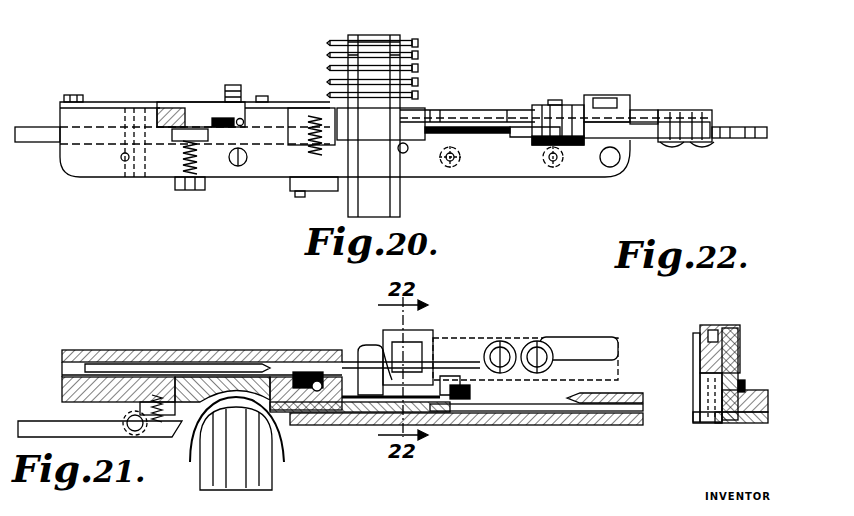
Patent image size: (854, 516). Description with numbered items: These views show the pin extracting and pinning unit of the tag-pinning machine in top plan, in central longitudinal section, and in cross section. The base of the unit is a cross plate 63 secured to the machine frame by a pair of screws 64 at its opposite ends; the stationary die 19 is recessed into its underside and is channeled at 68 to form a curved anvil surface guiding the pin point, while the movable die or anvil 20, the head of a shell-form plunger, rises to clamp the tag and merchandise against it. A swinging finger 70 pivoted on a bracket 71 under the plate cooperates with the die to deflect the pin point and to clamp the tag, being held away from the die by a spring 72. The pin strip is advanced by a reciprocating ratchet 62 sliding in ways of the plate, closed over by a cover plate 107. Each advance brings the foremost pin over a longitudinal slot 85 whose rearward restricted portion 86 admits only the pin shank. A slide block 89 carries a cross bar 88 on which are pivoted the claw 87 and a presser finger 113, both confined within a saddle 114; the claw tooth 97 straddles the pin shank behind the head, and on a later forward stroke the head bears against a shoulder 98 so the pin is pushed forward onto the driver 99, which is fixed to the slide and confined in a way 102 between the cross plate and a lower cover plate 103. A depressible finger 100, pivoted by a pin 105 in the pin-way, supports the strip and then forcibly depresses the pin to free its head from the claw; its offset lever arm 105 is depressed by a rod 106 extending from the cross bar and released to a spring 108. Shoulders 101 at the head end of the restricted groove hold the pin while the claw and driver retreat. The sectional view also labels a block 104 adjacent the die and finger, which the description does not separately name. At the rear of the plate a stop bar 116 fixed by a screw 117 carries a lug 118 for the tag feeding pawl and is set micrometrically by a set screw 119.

In FIG. 21, the stationary die or clamp block 19 is at (272, 380).
In FIG. 21, the movable die or anvil 20 is at (237, 443).
In FIG. 20, the reciprocating ratchet 62 is at (370, 140).
In FIG. 21, the reciprocating ratchet 62 is at (364, 355).
In FIG. 21, the cross plate 63 is at (62, 387).
In FIG. 22, the cross plate 63 is at (758, 392).
In FIG. 20, the screws 64 is at (242, 166).
In FIG. 21, the groove or channel 68 is at (203, 385).
In FIG. 20, the swinging finger 70 is at (58, 143).
In FIG. 21, the swinging finger 70 is at (200, 415).
In FIG. 21, the bracket 71 is at (123, 410).
In FIG. 21, the spring 72 is at (150, 395).
In FIG. 21, the longitudinal slot 85 is at (446, 380).
In FIG. 20, the restricted slot portion 86 is at (462, 138).
In FIG. 21, the restricted slot portion 86 is at (567, 398).
In FIG. 20, the claw 87 is at (675, 145).
In FIG. 21, the claw 87 is at (462, 386).
In FIG. 22, the claw 87 is at (742, 385).
In FIG. 20, the cross bar 88 is at (668, 110).
In FIG. 21, the cross bar 88 is at (515, 343).
In FIG. 22, the cross bar 88 is at (705, 325).
In FIG. 20, the slide block 89 is at (612, 95).
In FIG. 21, the slide block 89 is at (465, 338).
In FIG. 22, the slide block 89 is at (695, 340).
In FIG. 21, the claw tooth 97 is at (386, 348).
In FIG. 21, the shoulder 98 is at (420, 360).
In FIG. 21, the driver 99 is at (285, 412).
In FIG. 21, the depressible finger 100 is at (355, 410).
In FIG. 22, the depressible finger 100 is at (700, 405).
In FIG. 20, the shoulders 101 is at (410, 148).
In FIG. 21, the shoulders 101 is at (433, 412).
In FIG. 21, the groove or way 102 is at (643, 406).
In FIG. 22, the groove or way 102 is at (706, 423).
In FIG. 21, the cover plate 103 is at (545, 425).
In FIG. 22, the cover plate 103 is at (722, 423).
In FIG. 21, the block 104 is at (315, 380).
In FIG. 20, the pivot pin / offset lever arm 105 is at (218, 118).
In FIG. 21, the pivot pin / offset lever arm 105 is at (225, 378).
In FIG. 20, the rod 106 is at (470, 110).
In FIG. 21, the rod 106 is at (158, 364).
In FIG. 20, the cover plate 107 is at (113, 165).
In FIG. 20, the spring 108 is at (245, 118).
In FIG. 21, the spring 108 is at (262, 380).
In FIG. 20, the presser finger 113 is at (543, 150).
In FIG. 21, the presser finger 113 is at (372, 410).
In FIG. 22, the presser finger 113 is at (740, 345).
In FIG. 20, the saddle 114 is at (574, 105).
In FIG. 21, the saddle 114 is at (415, 340).
In FIG. 22, the saddle 114 is at (728, 328).
In FIG. 20, the stop bar 116 is at (165, 102).
In FIG. 20, the screw 117 is at (74, 95).
In FIG. 20, the lug or pin 118 is at (233, 85).
In FIG. 20, the set screw 119 is at (193, 192).